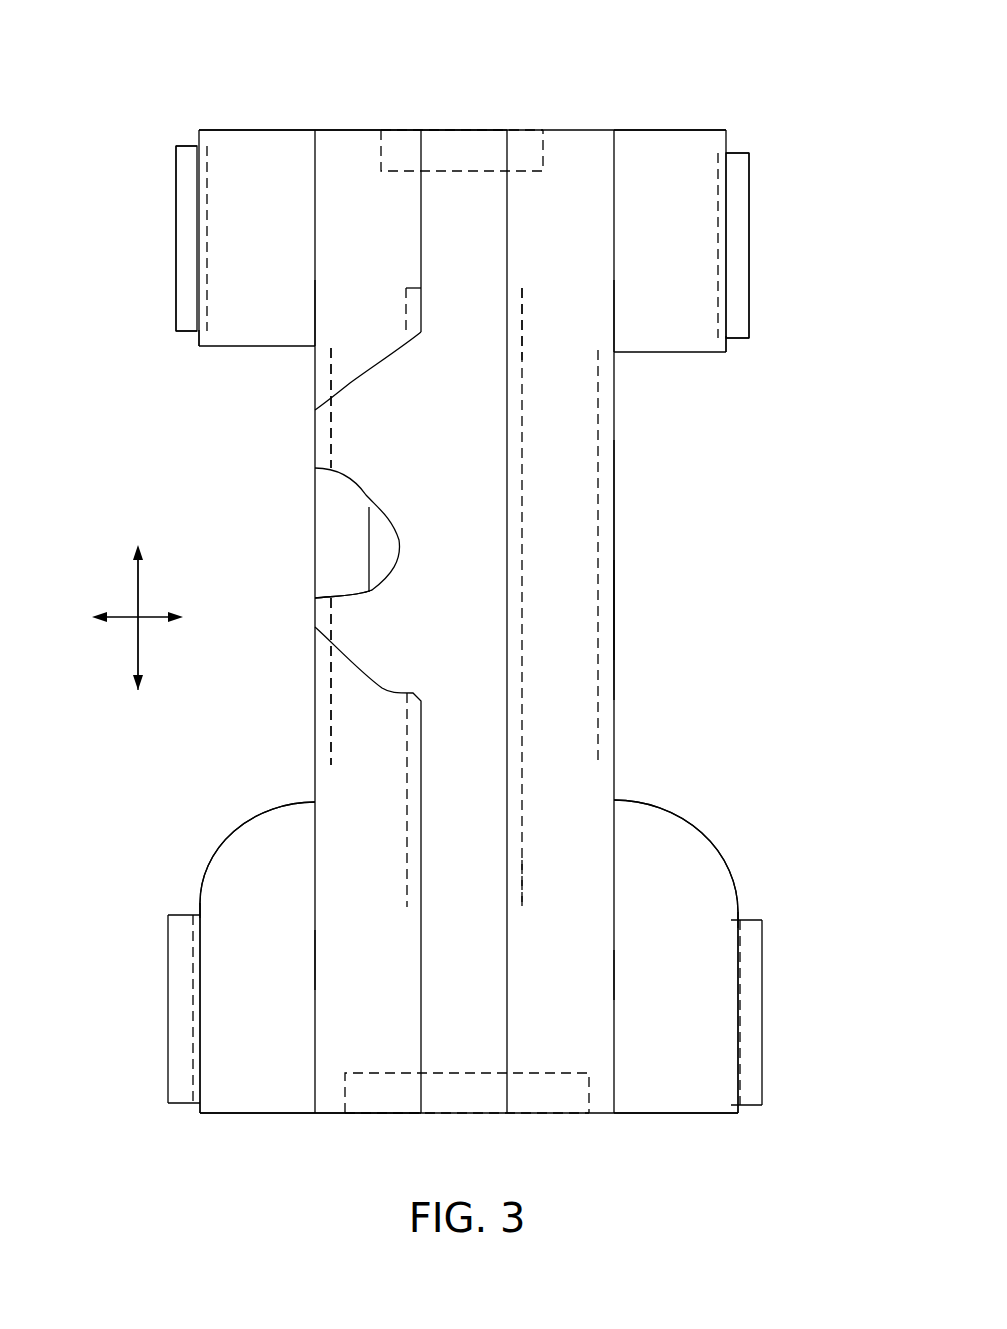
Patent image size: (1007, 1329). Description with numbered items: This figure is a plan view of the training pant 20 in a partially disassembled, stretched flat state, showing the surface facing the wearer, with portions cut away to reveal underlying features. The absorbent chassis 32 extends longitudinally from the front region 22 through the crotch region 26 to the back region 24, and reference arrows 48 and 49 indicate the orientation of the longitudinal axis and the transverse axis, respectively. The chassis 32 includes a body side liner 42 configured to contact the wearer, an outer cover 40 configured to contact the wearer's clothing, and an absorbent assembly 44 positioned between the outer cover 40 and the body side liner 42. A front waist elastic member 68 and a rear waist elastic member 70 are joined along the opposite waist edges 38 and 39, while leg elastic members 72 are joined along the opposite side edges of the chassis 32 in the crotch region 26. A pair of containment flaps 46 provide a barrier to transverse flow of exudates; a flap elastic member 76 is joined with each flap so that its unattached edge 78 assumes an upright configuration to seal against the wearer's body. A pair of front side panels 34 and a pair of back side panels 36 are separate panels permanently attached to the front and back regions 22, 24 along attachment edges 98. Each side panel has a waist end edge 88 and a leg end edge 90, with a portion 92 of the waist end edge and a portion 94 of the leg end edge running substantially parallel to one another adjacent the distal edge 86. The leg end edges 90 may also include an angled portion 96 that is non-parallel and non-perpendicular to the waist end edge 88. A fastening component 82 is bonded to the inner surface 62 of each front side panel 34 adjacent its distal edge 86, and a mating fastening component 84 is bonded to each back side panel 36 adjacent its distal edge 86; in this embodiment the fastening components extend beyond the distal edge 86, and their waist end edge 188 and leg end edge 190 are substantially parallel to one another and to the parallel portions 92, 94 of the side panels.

The training pant 20 is at (224, 122).
The front region 22 is at (392, 206).
The back region 24 is at (378, 1032).
The crotch region 26 is at (636, 628).
The absorbent chassis 32 is at (624, 600).
The front side panel 34 is at (220, 263).
The back side panel 36 is at (239, 1038).
The waist edge 38 is at (366, 130).
The waist edge 39 is at (330, 1113).
The outer cover 40 is at (357, 583).
The body side liner 42 is at (404, 450).
The absorbent assembly 44 is at (380, 556).
The containment flap 46 is at (407, 234).
The longitudinal axis arrow 48 is at (135, 588).
The transverse axis arrow 49 is at (121, 622).
The inner surface 62 is at (449, 953).
The front waist elastic member 68 is at (465, 150).
The rear waist elastic member 70 is at (548, 1093).
The leg elastic member 72 is at (331, 447).
The flap elastic member 76 is at (421, 290).
The unattached edge 78 is at (421, 786).
The fastening component 82 is at (185, 246).
The mating fastening component 84 is at (193, 990).
The distal edge 86 is at (188, 285).
The waist end edge 88 is at (268, 130).
The leg end edge 90 is at (270, 346).
The parallel portion of waist end edge 92 is at (203, 128).
The parallel portion of leg end edge 94 is at (205, 348).
The angled portion 96 is at (298, 838).
The attachment edge 98 is at (315, 301).
The waist end edge of fastening component 188 is at (186, 145).
The leg end edge of fastening component 190 is at (184, 334).